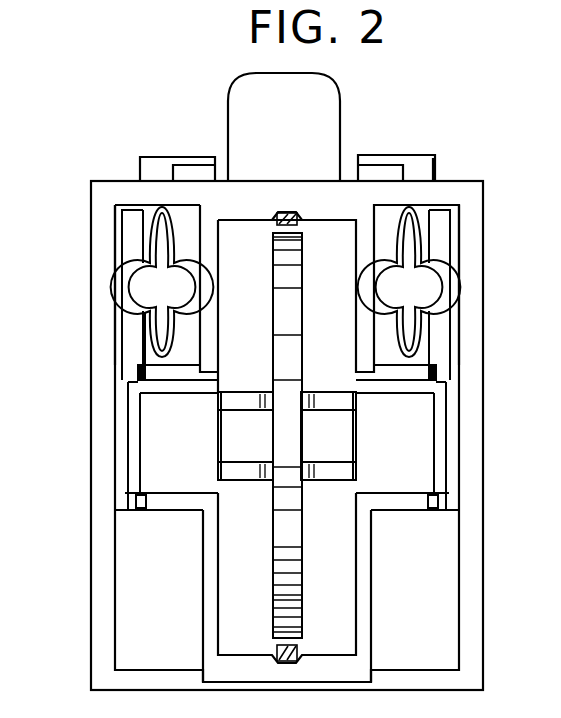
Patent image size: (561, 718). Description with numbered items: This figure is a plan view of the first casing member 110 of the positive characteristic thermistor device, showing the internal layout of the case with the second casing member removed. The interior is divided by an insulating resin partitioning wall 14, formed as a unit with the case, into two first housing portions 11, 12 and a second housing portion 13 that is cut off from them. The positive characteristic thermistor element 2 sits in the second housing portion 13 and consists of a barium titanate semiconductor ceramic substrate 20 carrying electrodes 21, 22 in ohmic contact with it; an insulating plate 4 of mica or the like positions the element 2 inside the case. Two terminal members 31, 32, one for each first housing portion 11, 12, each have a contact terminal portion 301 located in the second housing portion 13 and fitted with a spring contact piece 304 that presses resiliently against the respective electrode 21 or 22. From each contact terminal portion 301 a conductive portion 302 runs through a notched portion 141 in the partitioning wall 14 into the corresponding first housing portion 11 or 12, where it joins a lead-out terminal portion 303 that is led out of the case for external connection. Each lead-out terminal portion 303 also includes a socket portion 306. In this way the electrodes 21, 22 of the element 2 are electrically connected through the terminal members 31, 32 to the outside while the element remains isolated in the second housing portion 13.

The positive characteristic thermistor element 2 is at (326, 578).
The insulating plate 4 is at (284, 210).
The first housing portion 11 is at (133, 218).
The first housing portion 12 is at (422, 213).
The second housing portion 13 is at (237, 528).
The partitioning wall 14 is at (155, 377).
The substrate 20 is at (290, 615).
The electrode 21 is at (275, 603).
The electrode 22 is at (273, 575).
The terminal member 31 is at (124, 293).
The terminal member 32 is at (449, 282).
The first casing member 110 is at (417, 190).
The notched portion 141 is at (130, 358).
The contact terminal portion 301 is at (207, 443).
The conductive portion 302 is at (145, 395).
The lead-out terminal portion 303 is at (108, 253).
The spring contact piece 304 is at (233, 403).
The socket portion 306 is at (148, 327).